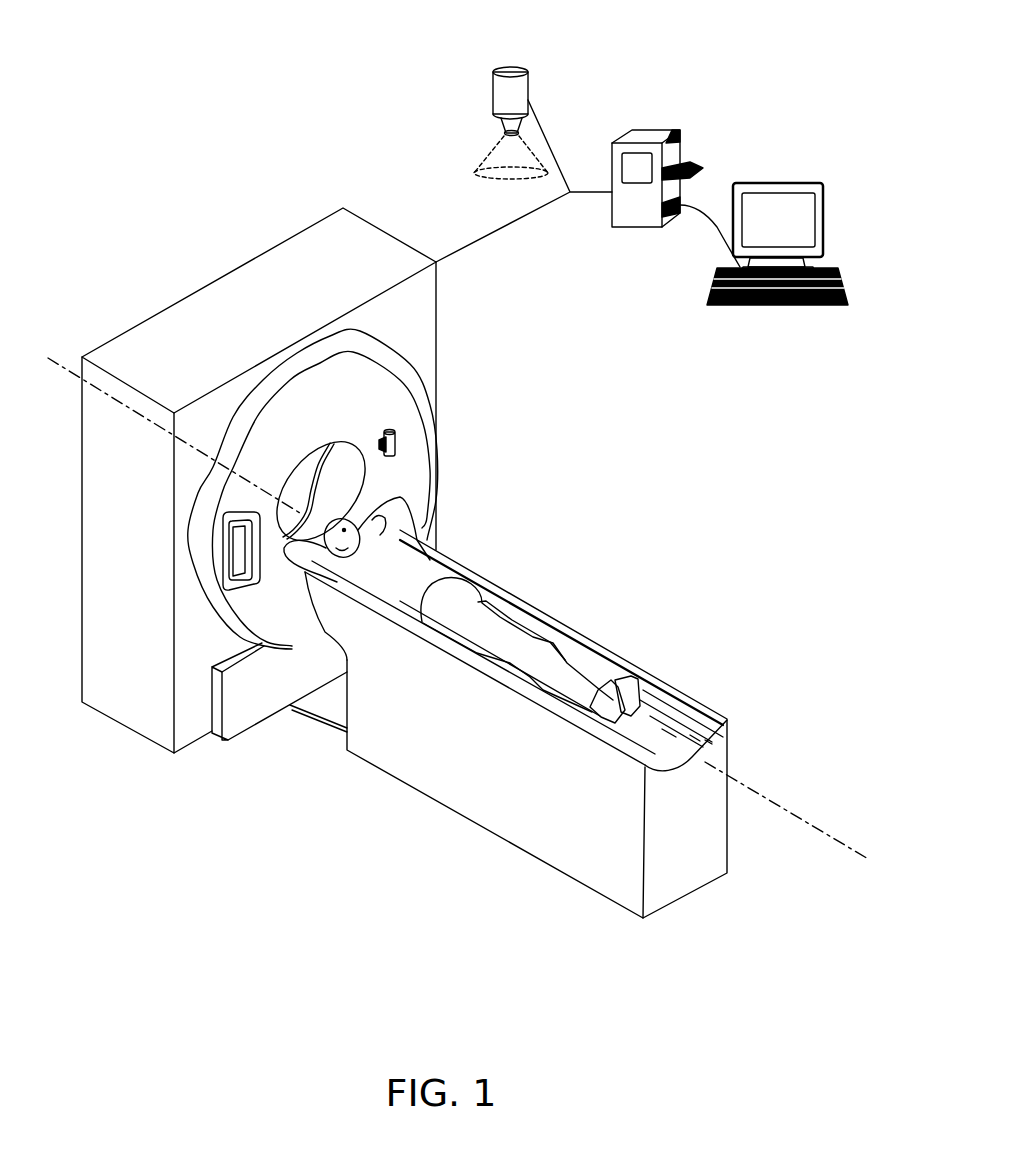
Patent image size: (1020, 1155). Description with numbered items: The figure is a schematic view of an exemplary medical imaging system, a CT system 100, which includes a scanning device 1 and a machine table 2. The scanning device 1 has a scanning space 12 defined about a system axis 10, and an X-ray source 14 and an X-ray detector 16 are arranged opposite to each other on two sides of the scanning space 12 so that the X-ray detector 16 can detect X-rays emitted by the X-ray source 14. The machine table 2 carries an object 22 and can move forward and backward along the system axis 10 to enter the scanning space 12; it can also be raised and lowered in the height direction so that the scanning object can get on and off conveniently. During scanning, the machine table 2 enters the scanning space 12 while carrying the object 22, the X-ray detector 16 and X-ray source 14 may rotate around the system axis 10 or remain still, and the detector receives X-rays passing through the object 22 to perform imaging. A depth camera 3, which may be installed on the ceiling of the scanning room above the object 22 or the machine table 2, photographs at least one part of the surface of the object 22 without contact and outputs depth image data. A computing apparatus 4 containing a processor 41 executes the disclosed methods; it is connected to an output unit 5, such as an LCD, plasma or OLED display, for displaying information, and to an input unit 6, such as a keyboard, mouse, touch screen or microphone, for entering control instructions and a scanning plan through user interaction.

The CT system 100 is at (129, 166).
The scanning device 1 is at (125, 710).
The scanning space 12 is at (307, 483).
The X-ray source 14 is at (398, 441).
The X-ray detector 16 is at (258, 583).
The machine table 2 is at (667, 693).
The object 22 is at (472, 593).
The depth camera 3 is at (520, 77).
The computing apparatus 4 is at (647, 133).
The processor 41 is at (620, 166).
The output unit 5 is at (775, 203).
The input unit 6 is at (790, 305).
The system axis 10 is at (760, 793).